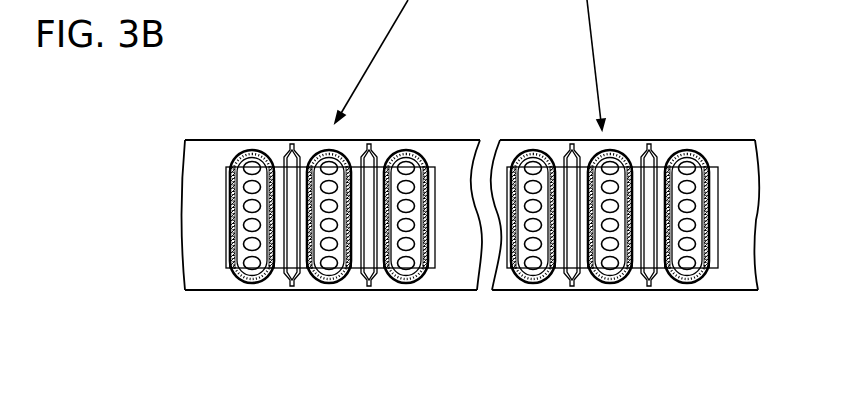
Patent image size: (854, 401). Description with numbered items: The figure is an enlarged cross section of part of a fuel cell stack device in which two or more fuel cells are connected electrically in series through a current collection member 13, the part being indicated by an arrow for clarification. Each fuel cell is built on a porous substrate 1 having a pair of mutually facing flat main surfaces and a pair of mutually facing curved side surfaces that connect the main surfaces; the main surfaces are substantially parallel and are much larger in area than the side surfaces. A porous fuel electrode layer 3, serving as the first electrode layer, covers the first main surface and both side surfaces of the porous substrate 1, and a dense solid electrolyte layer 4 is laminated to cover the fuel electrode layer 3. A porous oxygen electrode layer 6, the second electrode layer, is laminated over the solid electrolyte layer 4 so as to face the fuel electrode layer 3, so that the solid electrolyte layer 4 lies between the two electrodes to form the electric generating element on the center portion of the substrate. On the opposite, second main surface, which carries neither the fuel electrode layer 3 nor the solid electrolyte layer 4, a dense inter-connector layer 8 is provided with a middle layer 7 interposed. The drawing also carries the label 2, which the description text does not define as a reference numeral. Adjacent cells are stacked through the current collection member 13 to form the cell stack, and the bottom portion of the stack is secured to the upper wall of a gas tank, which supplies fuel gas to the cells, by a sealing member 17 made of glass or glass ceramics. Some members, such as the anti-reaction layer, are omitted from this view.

The sealing member 17 is at (440, 151).
The current collection member 13 is at (652, 146).
The oxygen electrode layer 6 is at (664, 176).
The middle layer 7 is at (705, 168).
The inter-connector layer 8 is at (711, 170).
The porous substrate 1 is at (672, 284).
The inner electrode 2 is at (668, 272).
The fuel electrode layer 3 is at (698, 278).
The solid electrolyte layer 4 is at (687, 272).